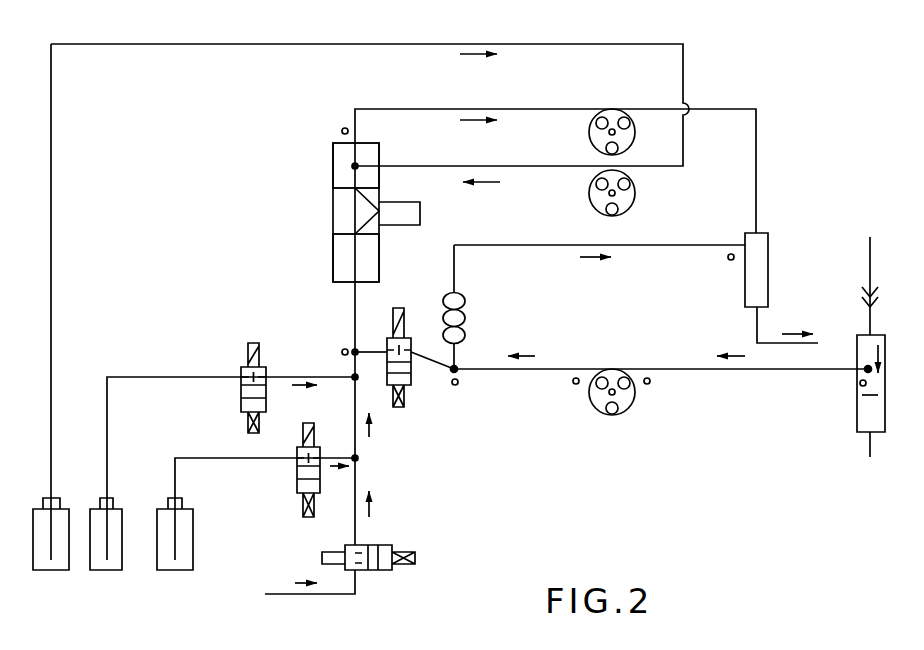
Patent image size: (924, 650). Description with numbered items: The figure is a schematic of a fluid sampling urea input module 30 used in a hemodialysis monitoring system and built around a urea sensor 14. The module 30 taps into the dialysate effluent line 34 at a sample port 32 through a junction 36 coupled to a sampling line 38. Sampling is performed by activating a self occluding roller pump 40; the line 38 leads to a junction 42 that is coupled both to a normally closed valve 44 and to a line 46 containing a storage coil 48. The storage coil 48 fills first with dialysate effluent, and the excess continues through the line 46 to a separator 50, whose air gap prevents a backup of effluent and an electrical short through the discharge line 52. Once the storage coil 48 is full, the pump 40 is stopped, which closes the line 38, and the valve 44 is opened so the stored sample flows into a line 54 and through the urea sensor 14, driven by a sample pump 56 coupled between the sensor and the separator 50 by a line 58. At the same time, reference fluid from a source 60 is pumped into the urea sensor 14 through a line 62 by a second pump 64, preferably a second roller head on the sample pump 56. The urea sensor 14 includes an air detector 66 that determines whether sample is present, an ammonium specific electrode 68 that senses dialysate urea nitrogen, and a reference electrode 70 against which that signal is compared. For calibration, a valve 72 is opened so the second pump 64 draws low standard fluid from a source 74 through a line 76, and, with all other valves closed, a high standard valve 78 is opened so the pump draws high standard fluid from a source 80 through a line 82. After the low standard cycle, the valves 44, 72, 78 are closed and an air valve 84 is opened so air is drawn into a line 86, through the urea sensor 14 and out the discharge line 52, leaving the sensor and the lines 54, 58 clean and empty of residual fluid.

The urea sensor 14 is at (328, 211).
The urea input/sensor module 30 is at (414, 463).
The sample port 32 is at (853, 418).
The dialysate effluent line 34 is at (868, 320).
The junction 36 is at (865, 371).
The sampling line 38 is at (680, 370).
The roller pump 40 is at (630, 410).
The junction 42 is at (458, 372).
The normally closed valve 44 is at (410, 390).
The line 46 is at (460, 246).
The storage coil 48 is at (466, 313).
The separator 50 is at (768, 262).
The discharge line 52 is at (795, 345).
The line 54 is at (360, 304).
The sample pump 56 is at (635, 126).
The line 58 is at (545, 109).
The reference fluid source 60 is at (65, 572).
The line 62 is at (182, 44).
The second pump 64 is at (599, 238).
The air detector 66 is at (333, 270).
The electrode 68 is at (420, 213).
The reference electrode 70 is at (333, 152).
The valve 72 is at (267, 365).
The low standard source 74 is at (88, 571).
The line 76 is at (135, 377).
The high standard valve 78 is at (297, 490).
The high standard source 80 is at (158, 572).
The line 82 is at (213, 458).
The air valve 84 is at (371, 571).
The line 86 is at (290, 595).